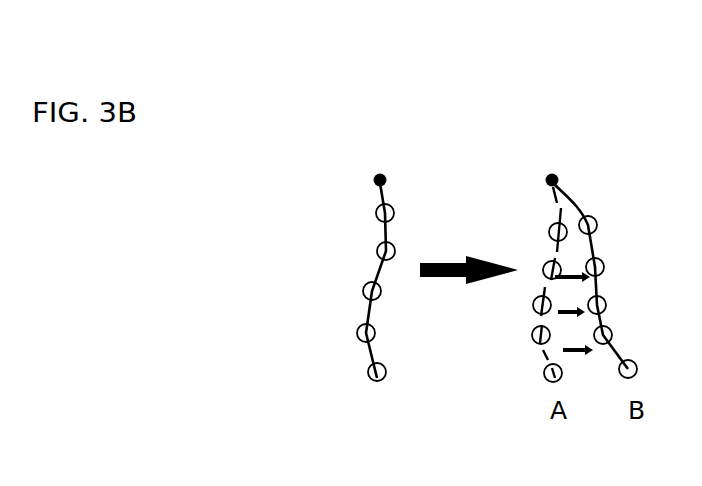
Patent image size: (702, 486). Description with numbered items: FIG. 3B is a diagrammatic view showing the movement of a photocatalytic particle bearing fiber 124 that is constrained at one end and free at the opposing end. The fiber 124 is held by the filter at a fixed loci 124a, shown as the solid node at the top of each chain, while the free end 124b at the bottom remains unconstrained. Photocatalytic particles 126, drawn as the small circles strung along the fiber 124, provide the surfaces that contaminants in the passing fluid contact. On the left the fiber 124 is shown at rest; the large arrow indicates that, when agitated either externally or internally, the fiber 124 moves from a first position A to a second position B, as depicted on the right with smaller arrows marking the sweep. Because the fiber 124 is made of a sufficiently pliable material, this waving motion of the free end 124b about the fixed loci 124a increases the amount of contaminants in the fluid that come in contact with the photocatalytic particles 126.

The fiber 124 is at (416, 160).
The fixed loci 124a is at (358, 181).
The free end 124b is at (379, 410).
The photocatalytic particles 126 is at (357, 332).